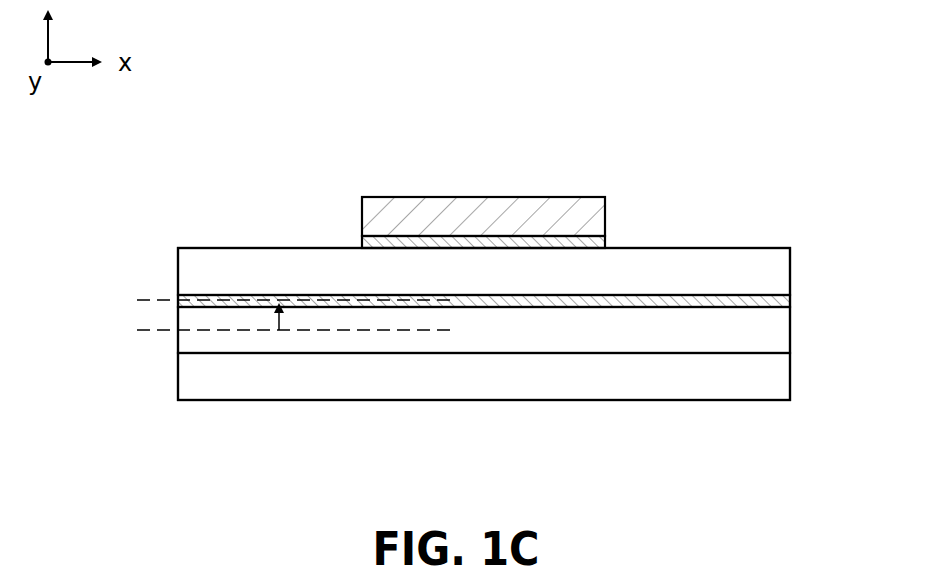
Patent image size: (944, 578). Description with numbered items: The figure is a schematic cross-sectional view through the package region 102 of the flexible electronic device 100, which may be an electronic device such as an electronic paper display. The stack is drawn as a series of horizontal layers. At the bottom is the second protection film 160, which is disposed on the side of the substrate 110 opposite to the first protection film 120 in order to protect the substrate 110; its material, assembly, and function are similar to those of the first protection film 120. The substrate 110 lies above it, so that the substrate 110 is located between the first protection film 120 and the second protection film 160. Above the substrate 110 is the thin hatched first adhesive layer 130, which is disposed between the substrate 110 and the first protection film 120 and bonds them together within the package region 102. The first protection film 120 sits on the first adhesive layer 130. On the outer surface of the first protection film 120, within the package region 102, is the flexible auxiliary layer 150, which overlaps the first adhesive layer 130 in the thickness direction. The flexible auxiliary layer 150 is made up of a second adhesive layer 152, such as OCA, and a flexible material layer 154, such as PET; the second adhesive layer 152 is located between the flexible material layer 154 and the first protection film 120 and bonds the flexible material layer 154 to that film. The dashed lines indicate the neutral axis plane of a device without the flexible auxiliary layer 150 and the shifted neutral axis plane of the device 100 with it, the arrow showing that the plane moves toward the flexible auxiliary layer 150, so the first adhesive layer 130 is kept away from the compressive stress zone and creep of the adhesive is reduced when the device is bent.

The flexible electronic device 100 is at (838, 490).
The package region 102 is at (178, 147).
The substrate 110 is at (770, 333).
The first protection film 120 is at (770, 273).
The first adhesive layer 130 is at (770, 302).
The flexible auxiliary layer 150 is at (270, 170).
The second adhesive layer 152 is at (392, 243).
The flexible material layer 154 is at (392, 219).
The second protection film 160 is at (770, 378).